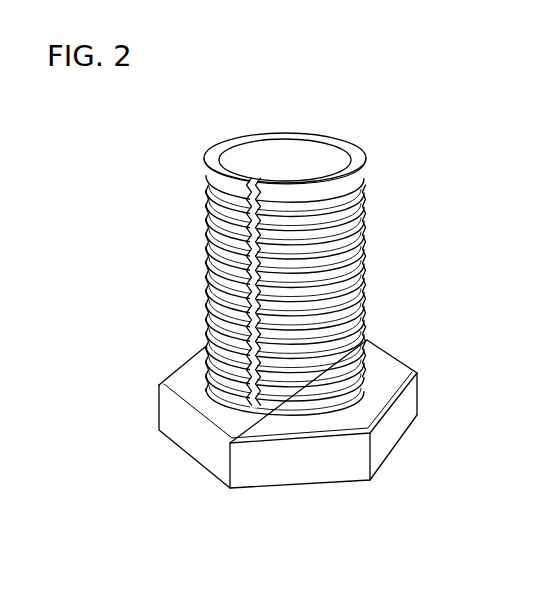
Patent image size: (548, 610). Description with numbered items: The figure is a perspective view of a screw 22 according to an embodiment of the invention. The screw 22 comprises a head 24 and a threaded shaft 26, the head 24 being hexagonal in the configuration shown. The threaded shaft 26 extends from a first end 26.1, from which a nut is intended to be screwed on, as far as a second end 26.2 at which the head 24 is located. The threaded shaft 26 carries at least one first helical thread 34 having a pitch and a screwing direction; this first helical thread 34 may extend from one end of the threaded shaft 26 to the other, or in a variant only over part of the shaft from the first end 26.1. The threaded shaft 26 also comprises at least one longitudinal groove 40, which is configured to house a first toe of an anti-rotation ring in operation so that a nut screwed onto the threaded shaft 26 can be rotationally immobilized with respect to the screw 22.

The screw 22 is at (370, 217).
The head 24 is at (393, 423).
The threaded shaft 26 is at (207, 243).
The first end 26.1 is at (312, 155).
The second end 26.2 is at (306, 400).
The first helical thread 34 is at (367, 283).
The longitudinal groove 40 is at (253, 177).